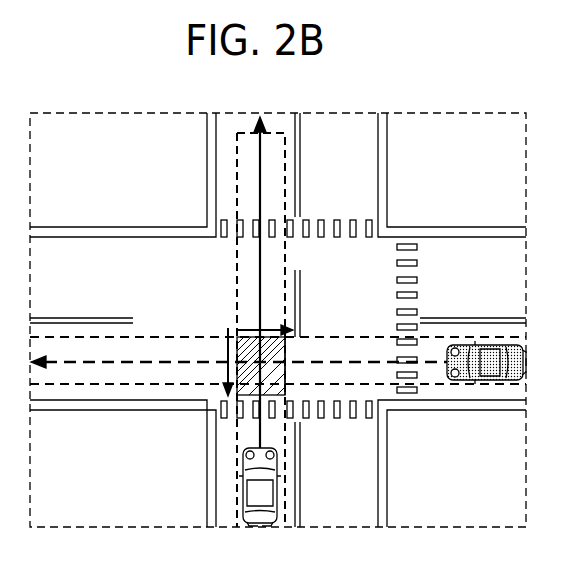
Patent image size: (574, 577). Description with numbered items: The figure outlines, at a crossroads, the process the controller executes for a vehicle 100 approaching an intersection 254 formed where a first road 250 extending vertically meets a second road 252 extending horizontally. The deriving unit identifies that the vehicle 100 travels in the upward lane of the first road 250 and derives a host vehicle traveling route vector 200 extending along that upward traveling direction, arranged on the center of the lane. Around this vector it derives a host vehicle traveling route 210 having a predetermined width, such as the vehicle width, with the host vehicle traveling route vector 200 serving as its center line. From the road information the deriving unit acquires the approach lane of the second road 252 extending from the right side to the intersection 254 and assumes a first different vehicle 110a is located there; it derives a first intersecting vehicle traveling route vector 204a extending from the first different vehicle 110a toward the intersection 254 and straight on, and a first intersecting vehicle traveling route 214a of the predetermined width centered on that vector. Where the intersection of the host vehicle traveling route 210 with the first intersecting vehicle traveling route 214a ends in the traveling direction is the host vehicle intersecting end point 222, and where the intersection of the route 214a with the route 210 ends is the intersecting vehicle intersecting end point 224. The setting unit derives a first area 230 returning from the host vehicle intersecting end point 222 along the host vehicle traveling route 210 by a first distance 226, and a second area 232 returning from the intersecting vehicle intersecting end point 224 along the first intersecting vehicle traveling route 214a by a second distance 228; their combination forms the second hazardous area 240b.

The vehicle 100 is at (243, 487).
The first different vehicle 110a is at (480, 380).
The host vehicle traveling route vector 200 is at (258, 160).
The first intersecting vehicle traveling route vector 204a is at (79, 364).
The host vehicle traveling route 210 is at (303, 162).
The first intersecting vehicle traveling route 214a is at (432, 338).
The host vehicle intersecting end point 222 is at (240, 328).
The intersecting vehicle intersecting end point 224 is at (223, 376).
The first distance 226 is at (223, 350).
The second distance 228 is at (282, 296).
The first area 230 is at (300, 407).
The second area 232 is at (309, 360).
The second hazardous area 240b is at (292, 384).
The first road 250 is at (363, 490).
The second road 252 is at (453, 252).
The intersection 254 is at (226, 254).